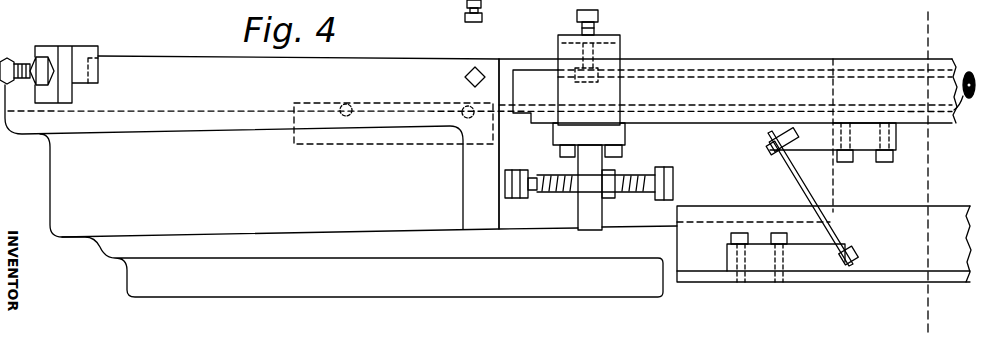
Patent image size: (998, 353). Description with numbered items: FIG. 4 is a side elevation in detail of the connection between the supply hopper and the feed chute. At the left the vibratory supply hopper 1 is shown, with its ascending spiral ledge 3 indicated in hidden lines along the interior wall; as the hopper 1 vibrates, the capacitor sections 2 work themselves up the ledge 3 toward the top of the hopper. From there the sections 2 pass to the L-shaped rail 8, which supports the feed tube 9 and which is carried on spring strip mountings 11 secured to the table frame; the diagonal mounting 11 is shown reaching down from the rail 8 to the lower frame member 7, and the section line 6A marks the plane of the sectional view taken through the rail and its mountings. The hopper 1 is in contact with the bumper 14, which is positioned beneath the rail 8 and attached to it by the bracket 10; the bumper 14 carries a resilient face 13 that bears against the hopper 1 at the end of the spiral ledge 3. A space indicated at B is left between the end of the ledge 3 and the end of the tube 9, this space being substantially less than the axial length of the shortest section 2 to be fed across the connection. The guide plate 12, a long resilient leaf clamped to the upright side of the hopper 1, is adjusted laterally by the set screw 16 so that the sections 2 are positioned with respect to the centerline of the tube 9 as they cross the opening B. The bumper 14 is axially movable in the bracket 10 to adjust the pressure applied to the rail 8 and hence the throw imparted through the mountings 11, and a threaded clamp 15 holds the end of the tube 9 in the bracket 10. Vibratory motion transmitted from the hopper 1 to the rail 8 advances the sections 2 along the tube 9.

The vibratory supply hopper 1 is at (85, 222).
The capacitor sections 2 is at (852, 106).
The spiral ledge 3 is at (140, 107).
The lower bar 7 is at (936, 284).
The rail 8 is at (697, 122).
The feed tube 9 is at (906, 75).
The bracket 10 is at (620, 52).
The spring strip mountings 11 is at (801, 183).
The guide plate 12 is at (440, 12).
The resilient face 13 is at (504, 177).
The bumper 14 is at (532, 195).
The threaded clamp 15 is at (590, 23).
The set screw 16 is at (464, 77).
The space B is at (508, 74).
The section line 6A is at (928, 15).